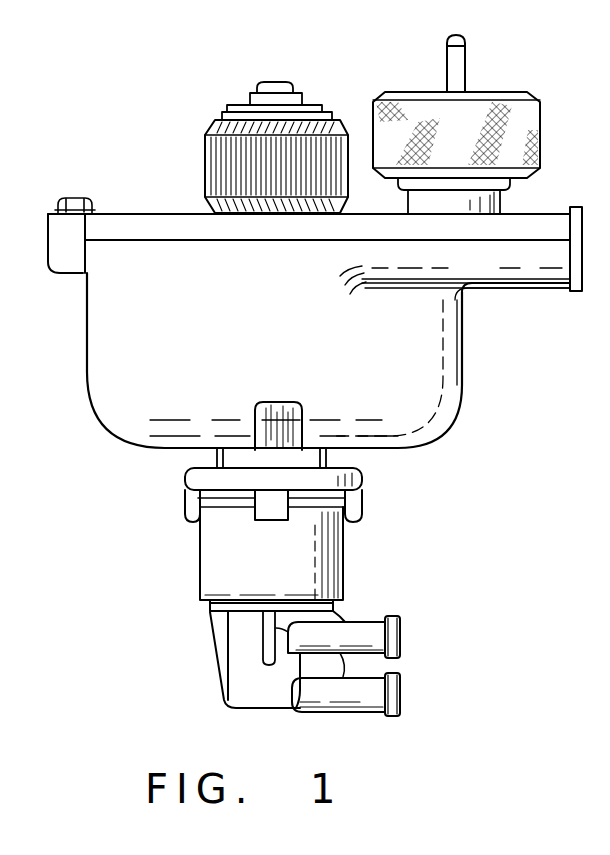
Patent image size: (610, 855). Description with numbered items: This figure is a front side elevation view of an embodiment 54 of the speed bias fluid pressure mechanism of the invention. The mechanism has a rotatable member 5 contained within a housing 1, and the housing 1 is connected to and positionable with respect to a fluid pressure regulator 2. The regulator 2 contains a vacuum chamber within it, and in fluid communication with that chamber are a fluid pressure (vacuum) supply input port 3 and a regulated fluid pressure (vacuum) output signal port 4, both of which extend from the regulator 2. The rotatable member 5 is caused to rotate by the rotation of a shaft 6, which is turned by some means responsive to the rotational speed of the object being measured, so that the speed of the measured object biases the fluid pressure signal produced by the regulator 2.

The embodiment of mechanism 54 is at (153, 108).
The housing 1 is at (445, 364).
The fluid pressure regulator 2 is at (320, 558).
The fluid pressure supply input port 3 is at (400, 637).
The regulated fluid pressure output signal port 4 is at (400, 697).
The rotatable member 5 is at (297, 82).
The shaft 6 is at (458, 73).